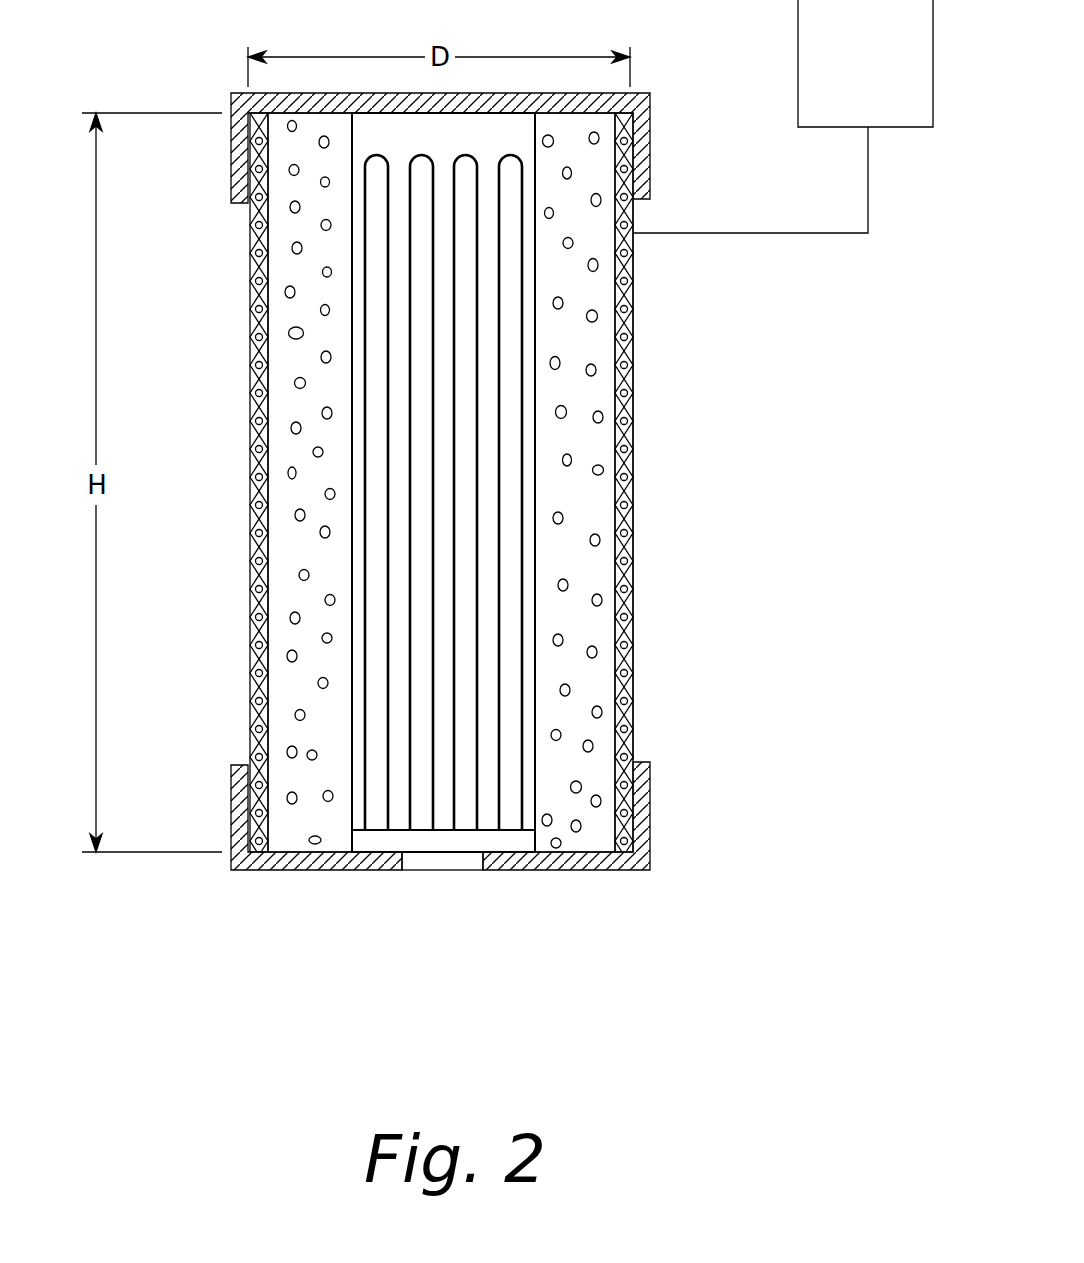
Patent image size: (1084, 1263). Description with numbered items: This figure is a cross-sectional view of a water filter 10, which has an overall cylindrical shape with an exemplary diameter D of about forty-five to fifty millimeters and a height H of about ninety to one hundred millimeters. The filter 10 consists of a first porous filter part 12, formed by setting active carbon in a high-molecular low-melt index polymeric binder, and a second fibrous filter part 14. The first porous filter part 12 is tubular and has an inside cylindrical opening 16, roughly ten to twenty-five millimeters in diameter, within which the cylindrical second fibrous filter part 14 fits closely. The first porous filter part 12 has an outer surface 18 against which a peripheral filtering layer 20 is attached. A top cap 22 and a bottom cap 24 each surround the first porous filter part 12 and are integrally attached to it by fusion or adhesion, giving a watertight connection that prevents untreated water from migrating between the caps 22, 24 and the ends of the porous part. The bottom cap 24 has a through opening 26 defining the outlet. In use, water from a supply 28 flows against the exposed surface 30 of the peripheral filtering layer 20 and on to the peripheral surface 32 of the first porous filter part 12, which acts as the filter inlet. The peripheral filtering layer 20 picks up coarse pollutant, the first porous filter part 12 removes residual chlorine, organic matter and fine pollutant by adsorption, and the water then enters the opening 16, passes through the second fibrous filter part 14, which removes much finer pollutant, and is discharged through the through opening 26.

The filter 10 is at (294, 905).
The first porous filter part 12 is at (593, 487).
The second fibrous filter part 14 is at (373, 542).
The inside cylindrical opening 16 is at (535, 708).
The outer surface 18 is at (633, 283).
The peripheral filtering layer 20 is at (633, 620).
The top cap 22 is at (650, 150).
The bottom cap 24 is at (363, 872).
The through opening 26 is at (405, 870).
The water supply 28 is at (783, 116).
The exposed surface 30 is at (633, 365).
The peripheral surface 32 is at (633, 433).